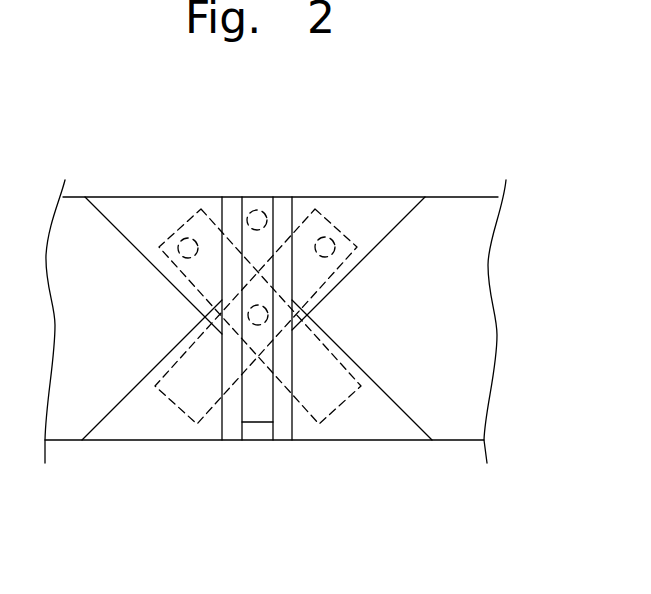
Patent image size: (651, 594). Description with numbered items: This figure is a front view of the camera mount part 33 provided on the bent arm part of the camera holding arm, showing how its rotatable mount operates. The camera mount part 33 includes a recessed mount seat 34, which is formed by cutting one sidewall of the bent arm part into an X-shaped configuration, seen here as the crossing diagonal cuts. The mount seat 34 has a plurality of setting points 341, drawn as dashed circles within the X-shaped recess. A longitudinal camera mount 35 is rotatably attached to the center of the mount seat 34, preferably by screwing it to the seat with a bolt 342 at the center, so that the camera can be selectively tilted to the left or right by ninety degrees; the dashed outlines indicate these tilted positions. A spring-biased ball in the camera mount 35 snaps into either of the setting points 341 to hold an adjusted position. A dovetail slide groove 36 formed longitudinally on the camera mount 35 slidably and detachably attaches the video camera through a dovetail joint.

The camera mount part 33 is at (77, 216).
The mount seat 34 is at (147, 217).
The setting points 341 is at (325, 237).
The bolt 342 is at (268, 316).
The camera mount 35 is at (235, 425).
The dovetail slide groove 36 is at (262, 430).